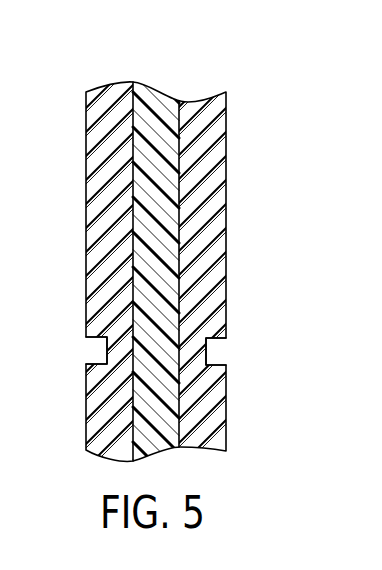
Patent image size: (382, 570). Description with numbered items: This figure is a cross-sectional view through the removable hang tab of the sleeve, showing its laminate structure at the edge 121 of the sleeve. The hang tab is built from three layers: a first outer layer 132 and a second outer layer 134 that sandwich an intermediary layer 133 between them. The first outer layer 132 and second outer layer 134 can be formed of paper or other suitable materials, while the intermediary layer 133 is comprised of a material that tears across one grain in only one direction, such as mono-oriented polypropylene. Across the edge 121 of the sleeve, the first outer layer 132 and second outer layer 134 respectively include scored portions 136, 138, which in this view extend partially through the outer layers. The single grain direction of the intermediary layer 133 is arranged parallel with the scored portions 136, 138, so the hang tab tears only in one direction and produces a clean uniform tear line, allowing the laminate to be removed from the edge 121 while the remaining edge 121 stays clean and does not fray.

The edge 121 is at (238, 363).
The first outer layer 132 is at (102, 102).
The intermediary layer 133 is at (150, 102).
The second outer layer 134 is at (208, 100).
The scored portion 136 is at (90, 353).
The scored portion 138 is at (223, 352).